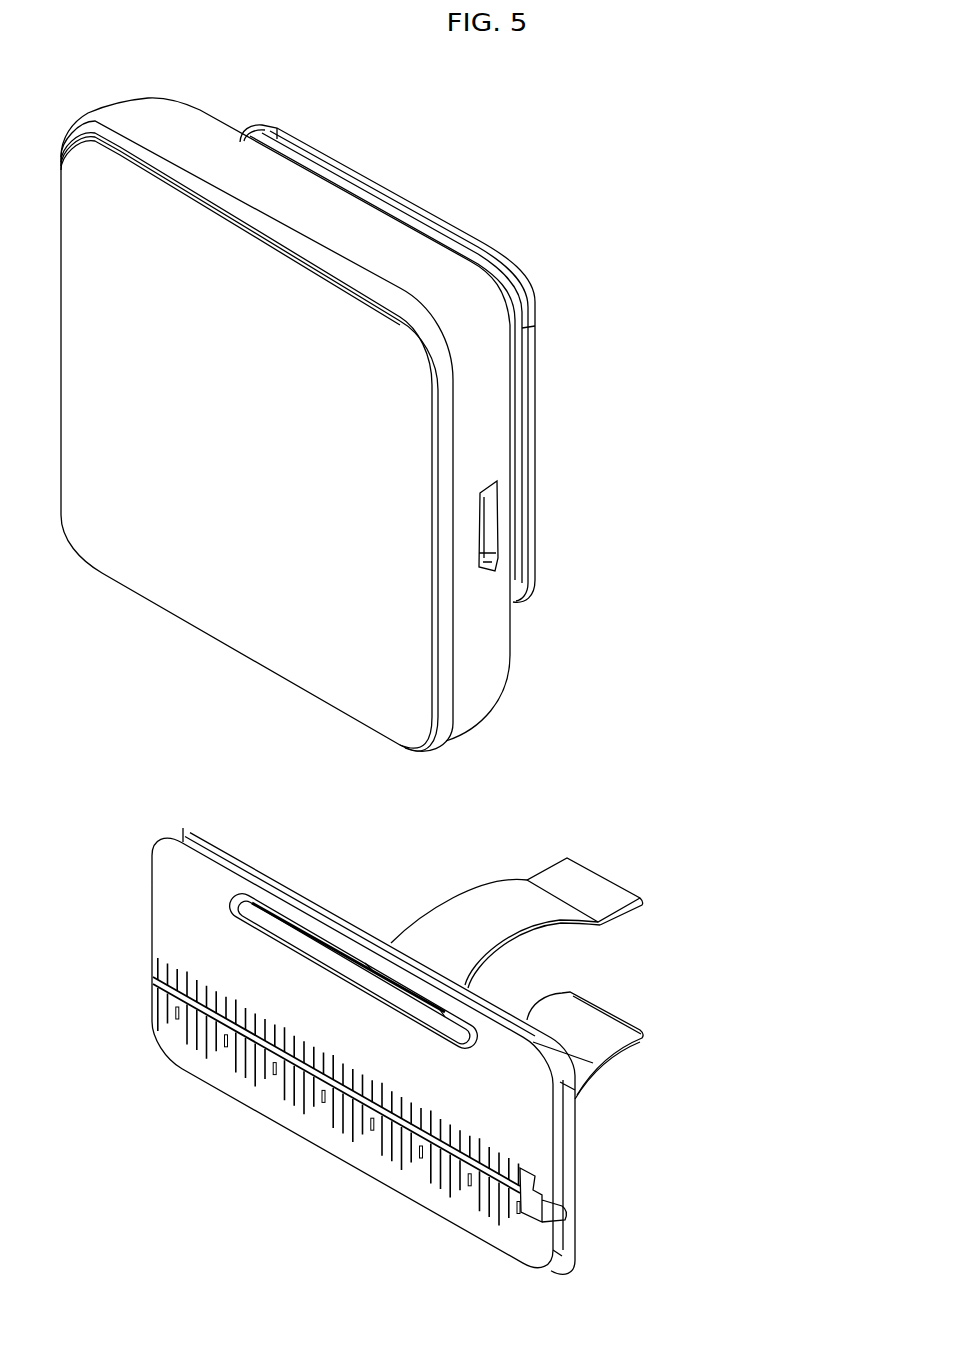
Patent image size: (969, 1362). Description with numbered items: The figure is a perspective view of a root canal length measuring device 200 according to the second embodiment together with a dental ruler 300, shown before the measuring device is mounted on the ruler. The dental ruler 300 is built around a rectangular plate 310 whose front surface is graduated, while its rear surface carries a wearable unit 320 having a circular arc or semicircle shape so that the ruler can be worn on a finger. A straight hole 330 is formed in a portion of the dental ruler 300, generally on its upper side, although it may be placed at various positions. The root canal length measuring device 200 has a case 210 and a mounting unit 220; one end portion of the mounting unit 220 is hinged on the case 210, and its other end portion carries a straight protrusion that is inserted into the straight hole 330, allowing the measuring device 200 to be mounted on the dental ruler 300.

The root canal length measuring device 200 is at (350, 424).
The case 210 is at (490, 664).
The mounting unit 220 is at (536, 412).
The dental ruler 300 is at (386, 1020).
The rectangular plate 310 is at (187, 914).
The wearable unit 320 is at (560, 878).
The straight hole 330 is at (300, 927).